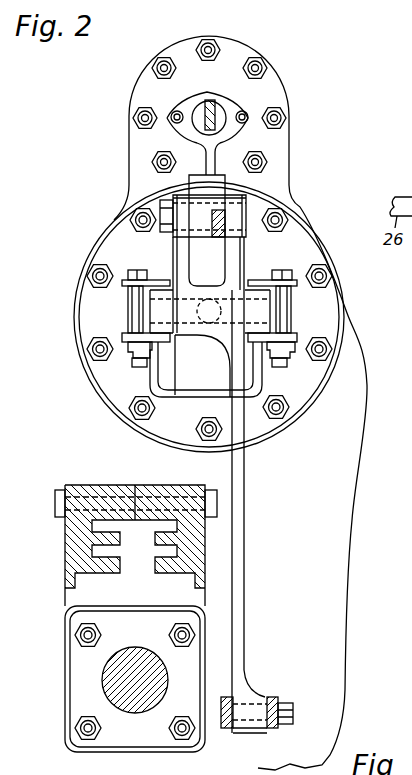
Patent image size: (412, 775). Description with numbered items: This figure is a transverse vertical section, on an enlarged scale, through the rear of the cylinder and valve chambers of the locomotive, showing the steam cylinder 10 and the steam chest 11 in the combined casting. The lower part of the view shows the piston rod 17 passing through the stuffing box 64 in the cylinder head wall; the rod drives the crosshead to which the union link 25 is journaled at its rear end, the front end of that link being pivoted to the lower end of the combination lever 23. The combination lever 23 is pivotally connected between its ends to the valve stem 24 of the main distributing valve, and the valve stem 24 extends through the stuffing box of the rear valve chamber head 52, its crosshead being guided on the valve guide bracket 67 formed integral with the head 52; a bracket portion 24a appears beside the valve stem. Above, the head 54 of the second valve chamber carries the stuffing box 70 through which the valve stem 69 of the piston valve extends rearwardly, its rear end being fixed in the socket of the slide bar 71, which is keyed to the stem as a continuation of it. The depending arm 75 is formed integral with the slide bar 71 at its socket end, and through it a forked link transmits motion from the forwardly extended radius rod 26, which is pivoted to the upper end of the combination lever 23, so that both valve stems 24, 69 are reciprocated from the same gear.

The head 54 is at (177, 47).
The slide bar 71 is at (209, 98).
The valve stem 69 is at (214, 104).
The stuffing box 70 is at (235, 104).
The depending arm 75 is at (212, 159).
The radius rod 26 is at (203, 254).
The valve stem 24 is at (202, 320).
The bracket 24a is at (252, 293).
The rear valve chamber head 52 is at (333, 313).
The steam chest 11 is at (365, 353).
The steam cylinder 10 is at (340, 733).
The valve guide bracket 67 is at (262, 385).
The combination lever 23 is at (246, 505).
The union link 25 is at (272, 733).
The stuffing box 64 is at (128, 742).
The piston rod 17 is at (107, 688).